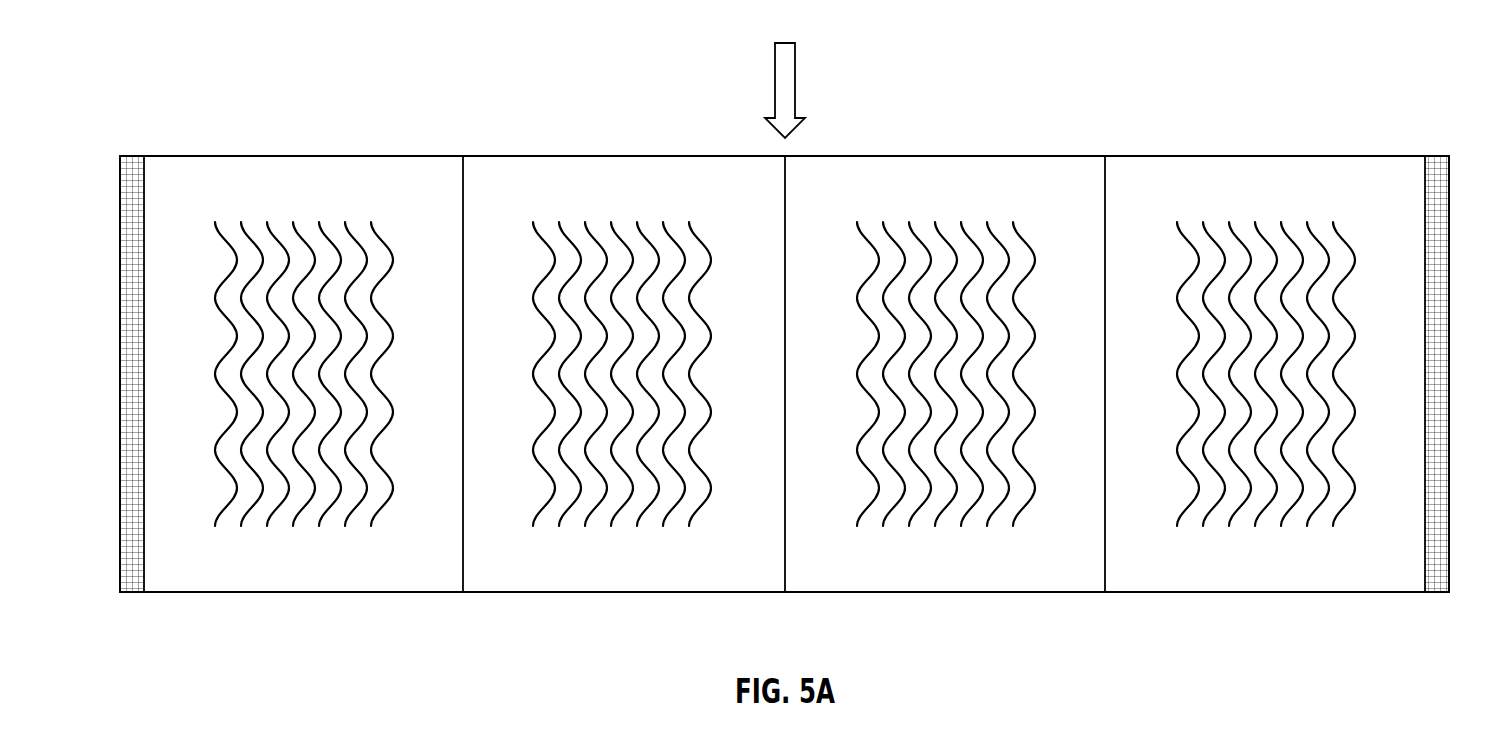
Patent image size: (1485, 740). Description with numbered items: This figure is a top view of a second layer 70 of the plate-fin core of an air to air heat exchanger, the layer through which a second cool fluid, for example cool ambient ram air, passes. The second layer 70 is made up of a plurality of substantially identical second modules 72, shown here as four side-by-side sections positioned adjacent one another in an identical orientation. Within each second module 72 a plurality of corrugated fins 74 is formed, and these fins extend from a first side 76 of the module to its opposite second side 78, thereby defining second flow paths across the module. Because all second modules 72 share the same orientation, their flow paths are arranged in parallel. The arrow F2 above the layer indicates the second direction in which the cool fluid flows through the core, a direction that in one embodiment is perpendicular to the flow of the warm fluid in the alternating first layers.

The second layer 70 is at (222, 82).
The second module 72 is at (935, 143).
The corrugated fin 74 is at (380, 230).
The first side 76 is at (201, 594).
The second side 78 is at (625, 155).
The arrow indicating second direction of fluid flow F2 is at (774, 83).